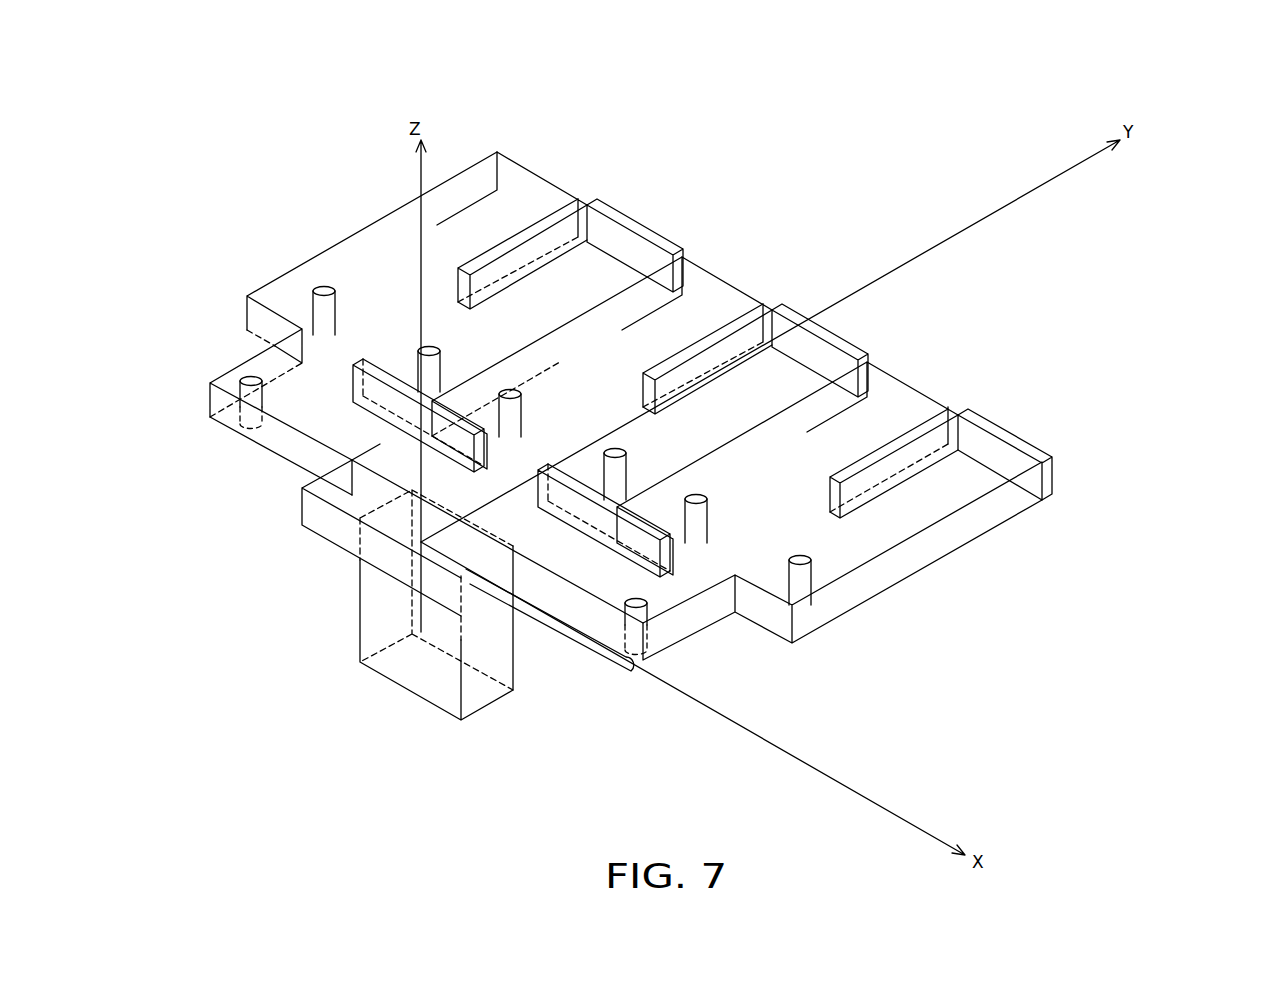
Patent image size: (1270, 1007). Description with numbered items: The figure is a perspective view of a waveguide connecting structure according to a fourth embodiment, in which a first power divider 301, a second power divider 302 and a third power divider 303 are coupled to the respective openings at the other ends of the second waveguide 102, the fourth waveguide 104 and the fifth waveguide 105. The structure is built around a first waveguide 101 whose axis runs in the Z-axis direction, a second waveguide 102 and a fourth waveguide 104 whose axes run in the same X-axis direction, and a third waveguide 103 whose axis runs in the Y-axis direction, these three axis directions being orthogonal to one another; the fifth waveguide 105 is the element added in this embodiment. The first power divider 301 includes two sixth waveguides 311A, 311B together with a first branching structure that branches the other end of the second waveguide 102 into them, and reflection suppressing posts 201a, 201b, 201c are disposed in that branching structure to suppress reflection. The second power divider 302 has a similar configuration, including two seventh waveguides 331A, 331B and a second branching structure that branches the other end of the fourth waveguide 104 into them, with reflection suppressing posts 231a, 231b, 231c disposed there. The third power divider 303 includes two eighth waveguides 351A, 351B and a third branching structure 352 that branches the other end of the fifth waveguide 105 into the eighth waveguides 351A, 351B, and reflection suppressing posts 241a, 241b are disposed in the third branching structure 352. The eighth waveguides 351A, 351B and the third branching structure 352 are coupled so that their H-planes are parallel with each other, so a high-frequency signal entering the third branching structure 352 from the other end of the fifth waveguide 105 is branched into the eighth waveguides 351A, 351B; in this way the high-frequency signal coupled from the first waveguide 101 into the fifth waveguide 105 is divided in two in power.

The first waveguide 101 is at (482, 682).
The second waveguide 102 is at (265, 466).
The third waveguide 103 is at (305, 540).
The fourth waveguide 104 is at (547, 632).
The fifth waveguide 105 is at (540, 420).
The reflection suppressing post 201a is at (248, 380).
The reflection suppressing post 201b is at (327, 290).
The reflection suppressing post 201c is at (417, 365).
The reflection suppressing post 231a is at (641, 618).
The reflection suppressing post 231b is at (701, 514).
The reflection suppressing post 231c is at (799, 582).
The reflection suppressing post 241a is at (508, 392).
The reflection suppressing post 241b is at (606, 482).
The first power divider 301 is at (588, 178).
The second power divider 302 is at (1020, 373).
The third power divider 303 is at (793, 297).
The sixth waveguide 311A is at (482, 222).
The sixth waveguide 311B is at (583, 265).
The seventh waveguide 331A is at (867, 427).
The seventh waveguide 331B is at (973, 480).
The eighth waveguide 351A is at (650, 285).
The eighth waveguide 351B is at (785, 377).
The third branching structure 352 is at (635, 414).